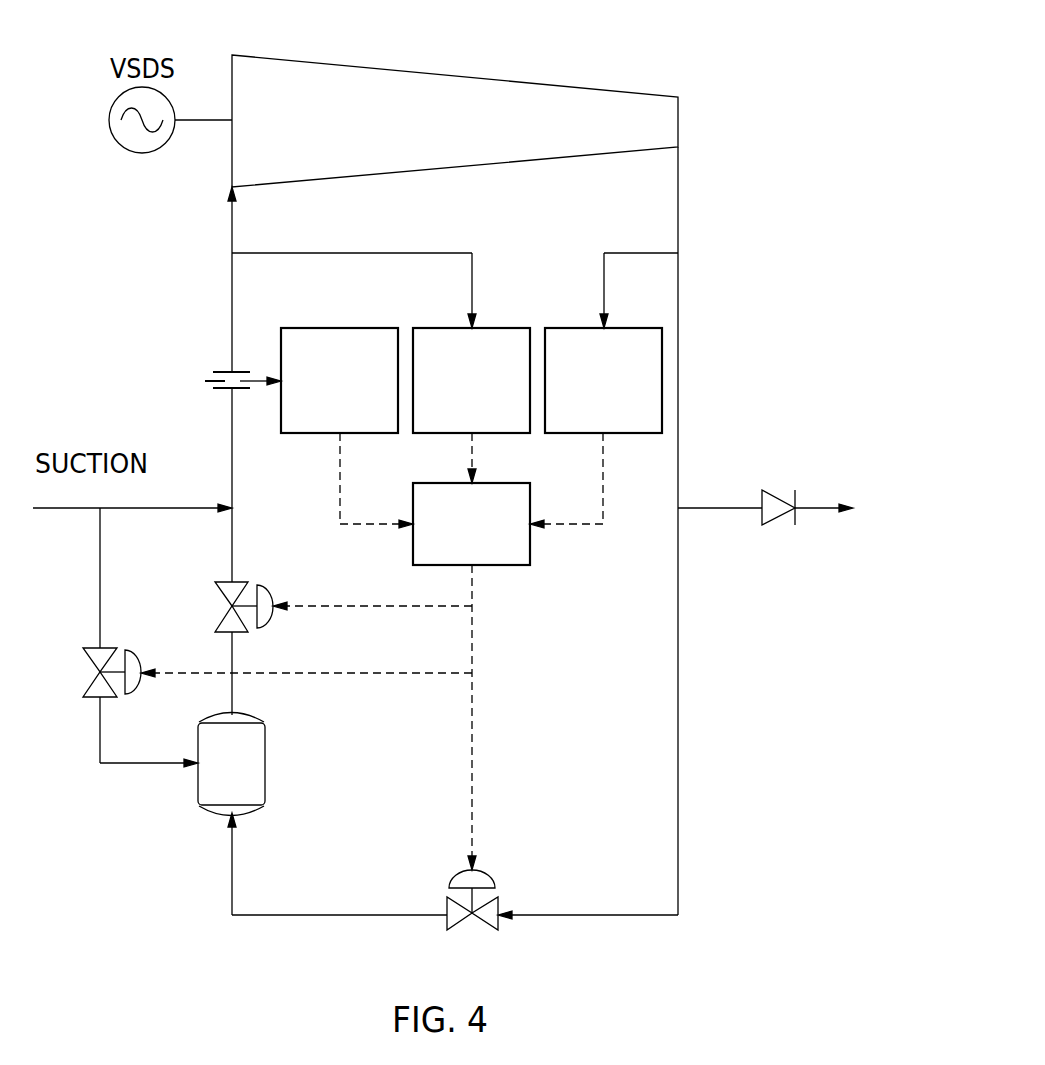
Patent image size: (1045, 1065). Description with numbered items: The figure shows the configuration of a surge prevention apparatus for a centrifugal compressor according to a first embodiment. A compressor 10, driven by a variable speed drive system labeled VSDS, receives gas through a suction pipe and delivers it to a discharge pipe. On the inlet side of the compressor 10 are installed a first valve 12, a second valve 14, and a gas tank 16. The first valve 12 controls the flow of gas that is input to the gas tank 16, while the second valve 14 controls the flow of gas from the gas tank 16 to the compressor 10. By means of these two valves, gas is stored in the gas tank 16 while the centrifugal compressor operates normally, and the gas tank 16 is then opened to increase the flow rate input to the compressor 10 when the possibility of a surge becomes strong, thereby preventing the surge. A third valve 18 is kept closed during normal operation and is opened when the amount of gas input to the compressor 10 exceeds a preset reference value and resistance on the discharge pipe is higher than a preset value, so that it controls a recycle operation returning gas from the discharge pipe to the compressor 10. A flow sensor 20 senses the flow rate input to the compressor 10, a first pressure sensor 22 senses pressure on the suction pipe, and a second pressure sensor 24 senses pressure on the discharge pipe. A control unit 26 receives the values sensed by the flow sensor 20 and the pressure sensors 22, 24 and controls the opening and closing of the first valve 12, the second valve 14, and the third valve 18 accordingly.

The compressor 10 is at (455, 76).
The first valve 12 is at (113, 648).
The second valve 14 is at (245, 582).
The gas tank 16 is at (267, 765).
The third valve 18 is at (497, 897).
The flow sensor 20 is at (340, 327).
The first pressure sensor 22 is at (505, 327).
The second pressure sensor 24 is at (570, 327).
The control unit 26 is at (530, 548).